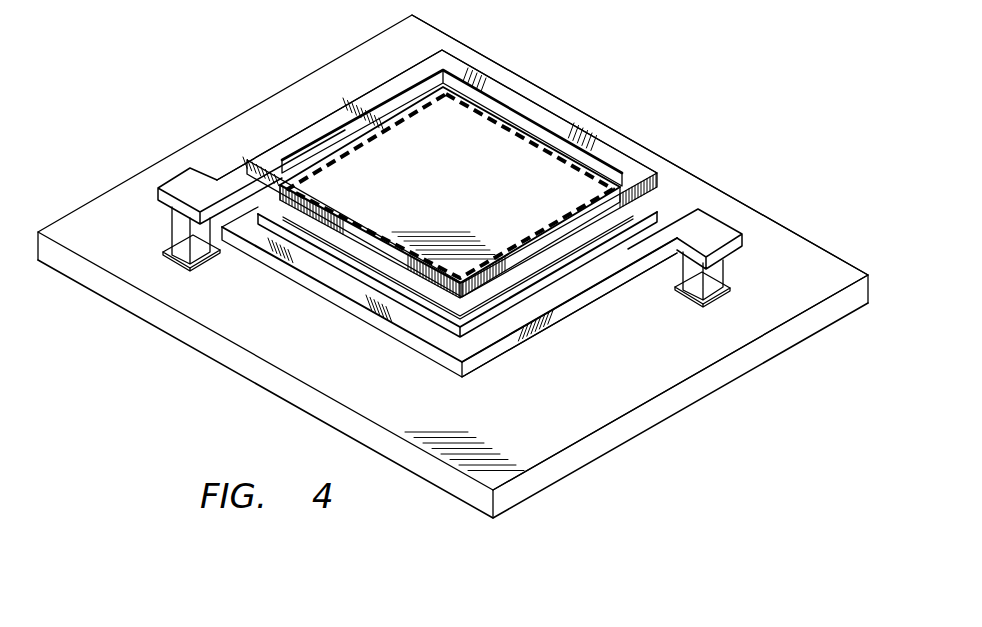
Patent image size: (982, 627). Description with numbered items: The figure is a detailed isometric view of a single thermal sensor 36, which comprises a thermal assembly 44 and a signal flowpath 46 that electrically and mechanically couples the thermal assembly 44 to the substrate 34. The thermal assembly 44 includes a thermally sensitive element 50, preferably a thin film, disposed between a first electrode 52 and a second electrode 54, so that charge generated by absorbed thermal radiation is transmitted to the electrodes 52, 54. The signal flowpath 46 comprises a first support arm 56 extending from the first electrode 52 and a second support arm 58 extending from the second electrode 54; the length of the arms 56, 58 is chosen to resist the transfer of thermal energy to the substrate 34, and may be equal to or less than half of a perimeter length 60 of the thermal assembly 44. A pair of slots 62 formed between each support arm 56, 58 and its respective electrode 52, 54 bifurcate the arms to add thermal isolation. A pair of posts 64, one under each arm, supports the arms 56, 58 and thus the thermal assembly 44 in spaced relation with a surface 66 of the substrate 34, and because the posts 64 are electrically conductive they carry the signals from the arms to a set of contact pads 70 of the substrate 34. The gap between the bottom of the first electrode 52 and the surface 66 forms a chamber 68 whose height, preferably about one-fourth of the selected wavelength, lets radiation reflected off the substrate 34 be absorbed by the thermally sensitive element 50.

The substrate 34 is at (683, 398).
The thermal sensor 36 is at (690, 90).
The thermal assembly 44 is at (662, 198).
The signal flowpath 46 is at (347, 90).
The thermally sensitive element 50 is at (431, 292).
The first electrode 52 is at (337, 250).
The second electrode 54 is at (474, 138).
The first support arm 56 is at (340, 307).
The second support arm 58 is at (608, 150).
The perimeter length 60 is at (337, 150).
The slots 62 is at (542, 138).
The posts 64 is at (203, 248).
The surface 66 is at (772, 228).
The chamber 68 is at (616, 322).
The contact pads 70 is at (170, 248).